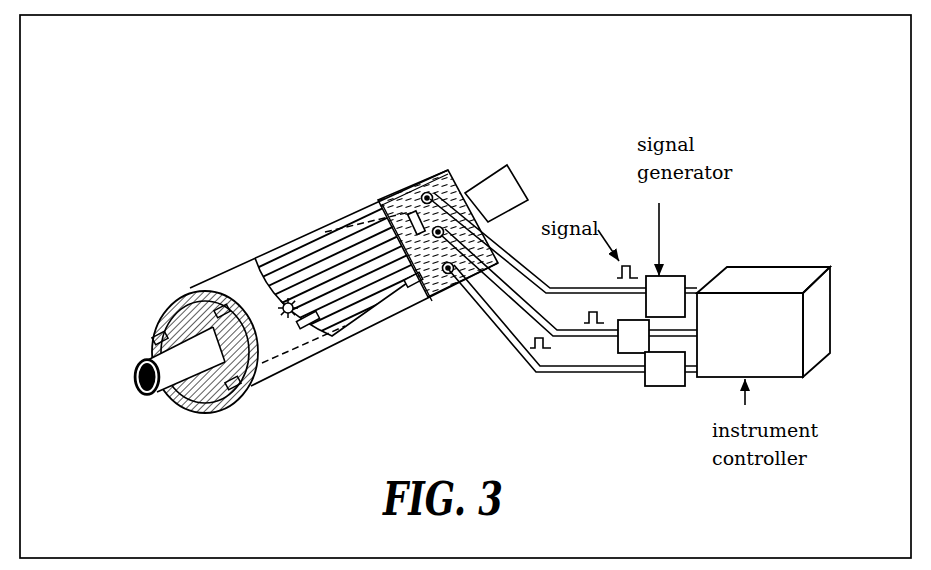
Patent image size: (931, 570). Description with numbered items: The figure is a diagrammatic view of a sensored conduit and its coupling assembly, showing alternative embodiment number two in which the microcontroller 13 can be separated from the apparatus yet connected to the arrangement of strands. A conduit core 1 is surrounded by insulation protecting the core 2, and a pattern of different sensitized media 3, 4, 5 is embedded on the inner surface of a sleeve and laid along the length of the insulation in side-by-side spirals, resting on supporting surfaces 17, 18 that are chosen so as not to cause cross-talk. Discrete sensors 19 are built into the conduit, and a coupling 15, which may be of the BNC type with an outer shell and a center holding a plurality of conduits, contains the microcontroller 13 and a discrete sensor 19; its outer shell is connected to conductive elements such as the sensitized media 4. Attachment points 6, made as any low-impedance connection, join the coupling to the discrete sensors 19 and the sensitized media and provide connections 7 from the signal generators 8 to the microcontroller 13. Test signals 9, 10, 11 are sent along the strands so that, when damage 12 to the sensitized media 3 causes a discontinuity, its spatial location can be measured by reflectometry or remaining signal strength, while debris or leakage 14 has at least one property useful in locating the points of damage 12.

The inner insulated core 1 is at (188, 361).
The insulation protecting the core 2 is at (192, 388).
The sensitized media 3 is at (157, 328).
The sensitized media 4 is at (222, 306).
The sensitized media 5 is at (293, 237).
The attachment point 6 is at (452, 230).
The connection 7 is at (525, 375).
The signal generator 8 is at (651, 331).
The test signal 9 is at (340, 342).
The test signal 10 is at (352, 220).
The test signal 11 is at (367, 207).
The damage 12 is at (273, 298).
The microcontroller 13 is at (763, 322).
The debris or leakage 14 is at (258, 363).
The coupling 15 is at (435, 167).
The supporting surface 17 is at (288, 330).
The supporting surface 18 is at (222, 414).
The discrete sensor 19 is at (412, 206).